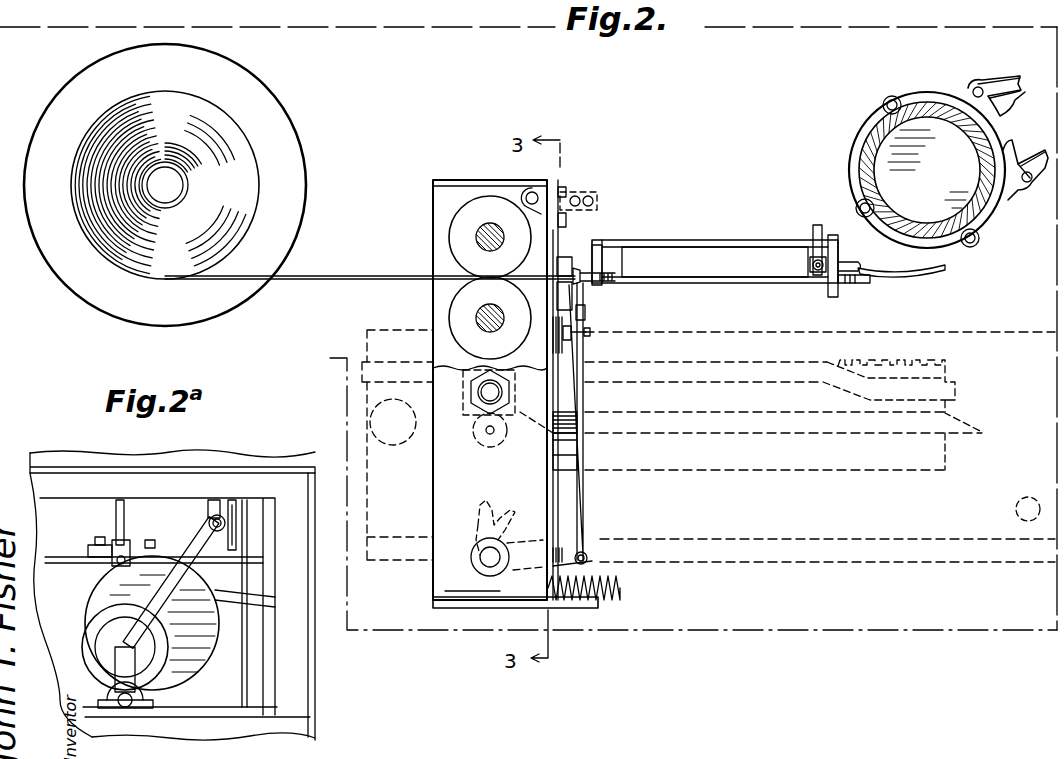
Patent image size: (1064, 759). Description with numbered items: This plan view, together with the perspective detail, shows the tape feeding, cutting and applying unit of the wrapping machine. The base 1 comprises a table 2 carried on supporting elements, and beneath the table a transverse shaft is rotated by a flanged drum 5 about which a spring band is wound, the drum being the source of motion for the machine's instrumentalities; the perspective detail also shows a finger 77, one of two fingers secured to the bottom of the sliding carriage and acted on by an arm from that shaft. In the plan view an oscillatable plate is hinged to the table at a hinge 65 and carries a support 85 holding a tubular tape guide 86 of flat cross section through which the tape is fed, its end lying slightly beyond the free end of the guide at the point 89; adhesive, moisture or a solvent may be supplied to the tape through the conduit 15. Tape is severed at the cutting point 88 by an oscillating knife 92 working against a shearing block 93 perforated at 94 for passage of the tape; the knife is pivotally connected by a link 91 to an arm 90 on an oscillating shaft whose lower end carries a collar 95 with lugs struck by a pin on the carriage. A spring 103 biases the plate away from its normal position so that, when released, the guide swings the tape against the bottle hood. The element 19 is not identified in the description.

In FIG. 2A, the base 1 is at (274, 454).
In FIG. 2A, the table 2 is at (96, 458).
In FIG. 2A, the flanged drum 5 is at (88, 645).
In FIG. 2A, the pulley 19 is at (204, 665).
In FIG. 2A, the finger 77 is at (206, 502).
In FIG. 2, the conduit 15 is at (855, 260).
In FIG. 2, the hinge 65 is at (545, 213).
In FIG. 2, the support 85 is at (703, 240).
In FIG. 2, the tubular tape guide 86 is at (750, 277).
In FIG. 2, the cutting point 88 is at (580, 270).
In FIG. 2, the point beyond free end of tubular guide 89 is at (945, 272).
In FIG. 2, the arm 90 is at (590, 556).
In FIG. 2, the link 91 is at (580, 396).
In FIG. 2, the oscillating knife 92 is at (576, 306).
In FIG. 2, the shearing block 93 is at (565, 262).
In FIG. 2, the perforation 94 is at (572, 290).
In FIG. 2, the collar 95 is at (478, 513).
In FIG. 2, the spring 103 is at (582, 602).